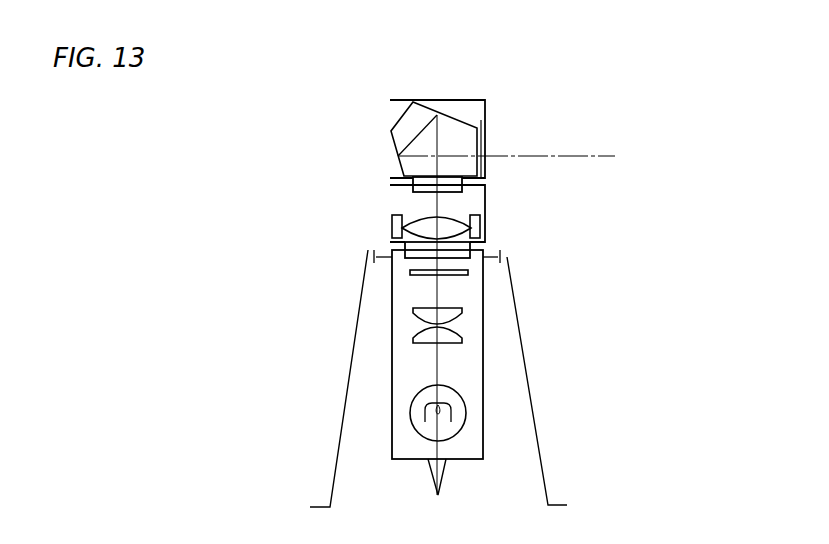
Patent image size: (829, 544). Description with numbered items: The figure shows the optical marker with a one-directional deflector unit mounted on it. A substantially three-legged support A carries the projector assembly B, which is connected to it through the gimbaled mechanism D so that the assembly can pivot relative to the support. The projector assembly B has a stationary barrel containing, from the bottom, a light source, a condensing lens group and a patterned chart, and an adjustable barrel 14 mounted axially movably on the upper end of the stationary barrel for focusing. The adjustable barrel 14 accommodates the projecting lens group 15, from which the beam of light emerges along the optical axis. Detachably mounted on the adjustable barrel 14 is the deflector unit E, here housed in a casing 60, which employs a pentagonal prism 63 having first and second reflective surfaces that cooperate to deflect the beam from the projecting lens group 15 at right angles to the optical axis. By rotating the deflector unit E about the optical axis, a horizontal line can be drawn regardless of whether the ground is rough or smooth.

The prism housing 60 is at (441, 100).
The pentagonal prism 63 is at (462, 137).
The deflector unit E is at (382, 138).
The adjustable barrel 14 is at (388, 195).
The projecting lens group 15 is at (443, 223).
The gimbaled mechanism D is at (371, 241).
The projector assembly B is at (390, 383).
The three-legged support A is at (355, 330).